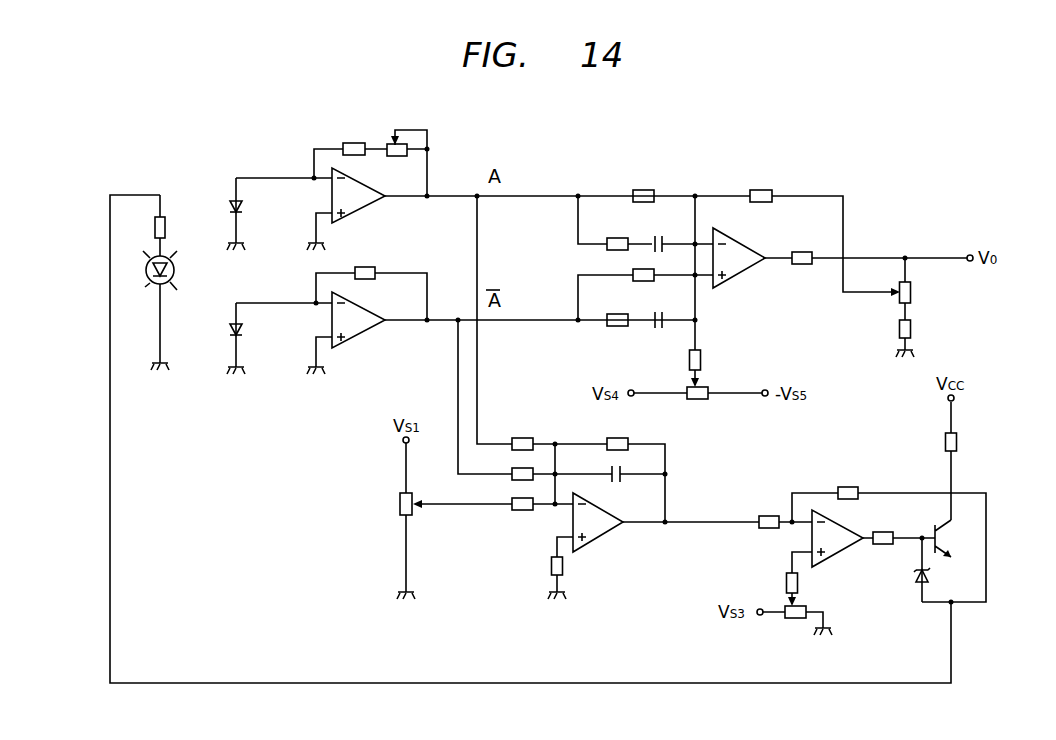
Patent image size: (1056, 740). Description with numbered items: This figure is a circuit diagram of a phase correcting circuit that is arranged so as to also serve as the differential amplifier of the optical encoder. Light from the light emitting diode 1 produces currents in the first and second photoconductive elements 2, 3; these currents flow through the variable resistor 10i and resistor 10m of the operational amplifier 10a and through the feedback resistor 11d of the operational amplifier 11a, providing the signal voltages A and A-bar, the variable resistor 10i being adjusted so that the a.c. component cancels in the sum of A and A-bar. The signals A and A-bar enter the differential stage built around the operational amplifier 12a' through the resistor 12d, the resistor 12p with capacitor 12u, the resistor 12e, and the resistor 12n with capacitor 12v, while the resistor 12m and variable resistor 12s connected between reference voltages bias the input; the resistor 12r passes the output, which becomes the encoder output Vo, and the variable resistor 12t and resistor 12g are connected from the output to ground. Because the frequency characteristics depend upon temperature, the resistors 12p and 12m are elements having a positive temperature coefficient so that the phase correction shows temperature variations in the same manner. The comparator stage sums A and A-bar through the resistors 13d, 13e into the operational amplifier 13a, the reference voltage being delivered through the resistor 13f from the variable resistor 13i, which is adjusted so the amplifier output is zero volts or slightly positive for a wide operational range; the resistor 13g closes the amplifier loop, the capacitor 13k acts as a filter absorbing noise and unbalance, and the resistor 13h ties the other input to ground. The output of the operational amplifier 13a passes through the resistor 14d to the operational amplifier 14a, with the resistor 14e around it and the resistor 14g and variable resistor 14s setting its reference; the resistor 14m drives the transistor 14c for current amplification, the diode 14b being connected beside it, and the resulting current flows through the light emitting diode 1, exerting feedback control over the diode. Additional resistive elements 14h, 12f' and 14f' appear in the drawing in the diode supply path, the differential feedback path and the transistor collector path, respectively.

The light emitting diode 1 is at (158, 287).
The first photoconductive element 2 is at (243, 207).
The second photoconductive element 3 is at (243, 330).
The operational amplifier 10a is at (363, 214).
The resistor 10m is at (350, 143).
The variable resistor 10i is at (396, 157).
The operational amplifier 11a is at (358, 341).
The feedback resistor 11d is at (366, 268).
The resistor 14h is at (166, 228).
The resistor 12d is at (643, 190).
The resistor 12f' is at (764, 178).
The resistor 12p is at (615, 238).
The capacitor 12u is at (658, 254).
The resistor 12e is at (638, 282).
The resistor 12n is at (618, 327).
The capacitor 12v is at (658, 329).
The operational amplifier 12a' is at (753, 267).
The resistor 12r is at (802, 252).
The variable resistor 12t is at (911, 293).
The resistor 12g is at (911, 331).
The resistor 12m is at (701, 360).
The variable resistor 12s is at (698, 400).
The resistor 13d is at (521, 438).
The resistor 13g is at (620, 436).
The resistor 13e is at (512, 471).
The resistor 13f is at (512, 501).
The capacitor 13k is at (618, 484).
The variable resistor 13i is at (398, 505).
The operational amplifier 13a is at (602, 543).
The resistor 13h is at (563, 568).
The resistor 14d is at (768, 516).
The resistor 14e is at (848, 487).
The resistor 14m is at (884, 530).
The transistor 14c is at (950, 540).
The operational amplifier 14a is at (843, 558).
The diode 14b is at (912, 580).
The resistor 14g is at (786, 583).
The variable resistor 14s is at (793, 620).
The resistor 14f' is at (978, 440).